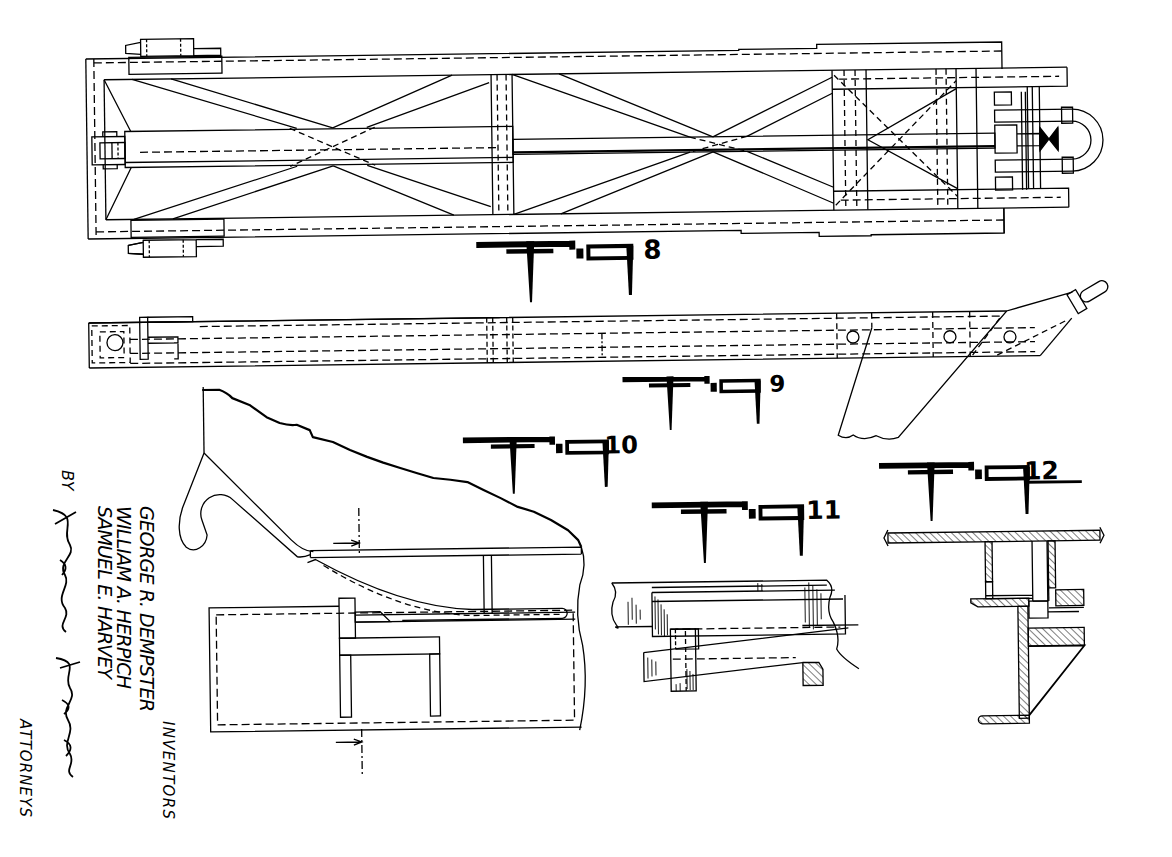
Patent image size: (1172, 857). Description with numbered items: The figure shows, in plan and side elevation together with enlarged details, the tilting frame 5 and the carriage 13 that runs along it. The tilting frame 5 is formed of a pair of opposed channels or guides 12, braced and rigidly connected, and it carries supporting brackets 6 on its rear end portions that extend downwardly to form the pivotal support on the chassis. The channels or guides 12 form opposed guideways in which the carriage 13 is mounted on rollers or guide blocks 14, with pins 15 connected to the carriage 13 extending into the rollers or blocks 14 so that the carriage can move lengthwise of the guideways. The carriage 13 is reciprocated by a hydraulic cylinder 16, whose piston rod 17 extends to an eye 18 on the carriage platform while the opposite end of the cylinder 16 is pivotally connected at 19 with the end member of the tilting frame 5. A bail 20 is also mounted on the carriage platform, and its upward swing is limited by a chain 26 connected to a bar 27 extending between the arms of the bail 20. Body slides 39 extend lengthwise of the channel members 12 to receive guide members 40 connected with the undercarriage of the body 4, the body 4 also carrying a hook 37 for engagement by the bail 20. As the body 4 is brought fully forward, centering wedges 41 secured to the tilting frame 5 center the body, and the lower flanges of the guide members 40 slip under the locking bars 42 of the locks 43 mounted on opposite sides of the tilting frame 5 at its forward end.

In FIG. 10, the body 4 is at (310, 440).
In FIG. 12, the body 4 is at (1083, 533).
In FIG. 8, the tilting frame 5 is at (318, 240).
In FIG. 9, the tilting frame 5 is at (382, 312).
In FIG. 10, the tilting frame 5 is at (225, 600).
In FIG. 11, the tilting frame 5 is at (637, 592).
In FIG. 12, the tilting frame 5 is at (985, 602).
In FIG. 8, the supporting brackets 6 is at (978, 247).
In FIG. 9, the supporting brackets 6 is at (930, 392).
In FIG. 8, the channels or guides 12 is at (688, 60).
In FIG. 9, the channels or guides 12 is at (452, 365).
In FIG. 10, the channels or guides 12 is at (347, 641).
In FIG. 8, the carriage 13 is at (834, 133).
In FIG. 9, the carriage 13 is at (1042, 352).
In FIG. 9, the rollers or guide blocks 14 is at (836, 330).
In FIG. 9, the pins 15 is at (955, 335).
In FIG. 8, the hydraulic cylinder 16 is at (372, 170).
In FIG. 9, the hydraulic cylinder 16 is at (480, 355).
In FIG. 8, the piston rod 17 is at (566, 146).
In FIG. 9, the piston rod 17 is at (602, 362).
In FIG. 8, the eye 18 is at (1030, 140).
In FIG. 8, the pivotal connection 19 is at (92, 164).
In FIG. 9, the pivotal connection 19 is at (92, 330).
In FIG. 8, the bail 20 is at (1096, 150).
In FIG. 9, the bail 20 is at (1097, 298).
In FIG. 8, the chain 26 is at (1050, 153).
In FIG. 8, the bar 27 is at (1068, 122).
In FIG. 10, the attaching hook 37 is at (208, 530).
In FIG. 8, the body slides 39 is at (223, 66).
In FIG. 11, the body slides 39 is at (668, 593).
In FIG. 12, the body slides 39 is at (992, 564).
In FIG. 8, the guide members 40 is at (214, 55).
In FIG. 10, the guide members 40 is at (557, 583).
In FIG. 11, the guide members 40 is at (643, 667).
In FIG. 12, the guide members 40 is at (1056, 564).
In FIG. 10, the centering wedges 41 is at (362, 620).
In FIG. 11, the centering wedges 41 is at (675, 640).
In FIG. 12, the centering wedges 41 is at (1045, 617).
In FIG. 8, the locking bars 42 is at (160, 257).
In FIG. 9, the locking bars 42 is at (172, 318).
In FIG. 10, the locking bars 42 is at (444, 600).
In FIG. 11, the locking bars 42 is at (805, 688).
In FIG. 12, the locking bars 42 is at (1083, 594).
In FIG. 9, the locks 43 is at (142, 318).
In FIG. 10, the locks 43 is at (337, 602).
In FIG. 11, the locks 43 is at (672, 660).
In FIG. 12, the locks 43 is at (1040, 571).